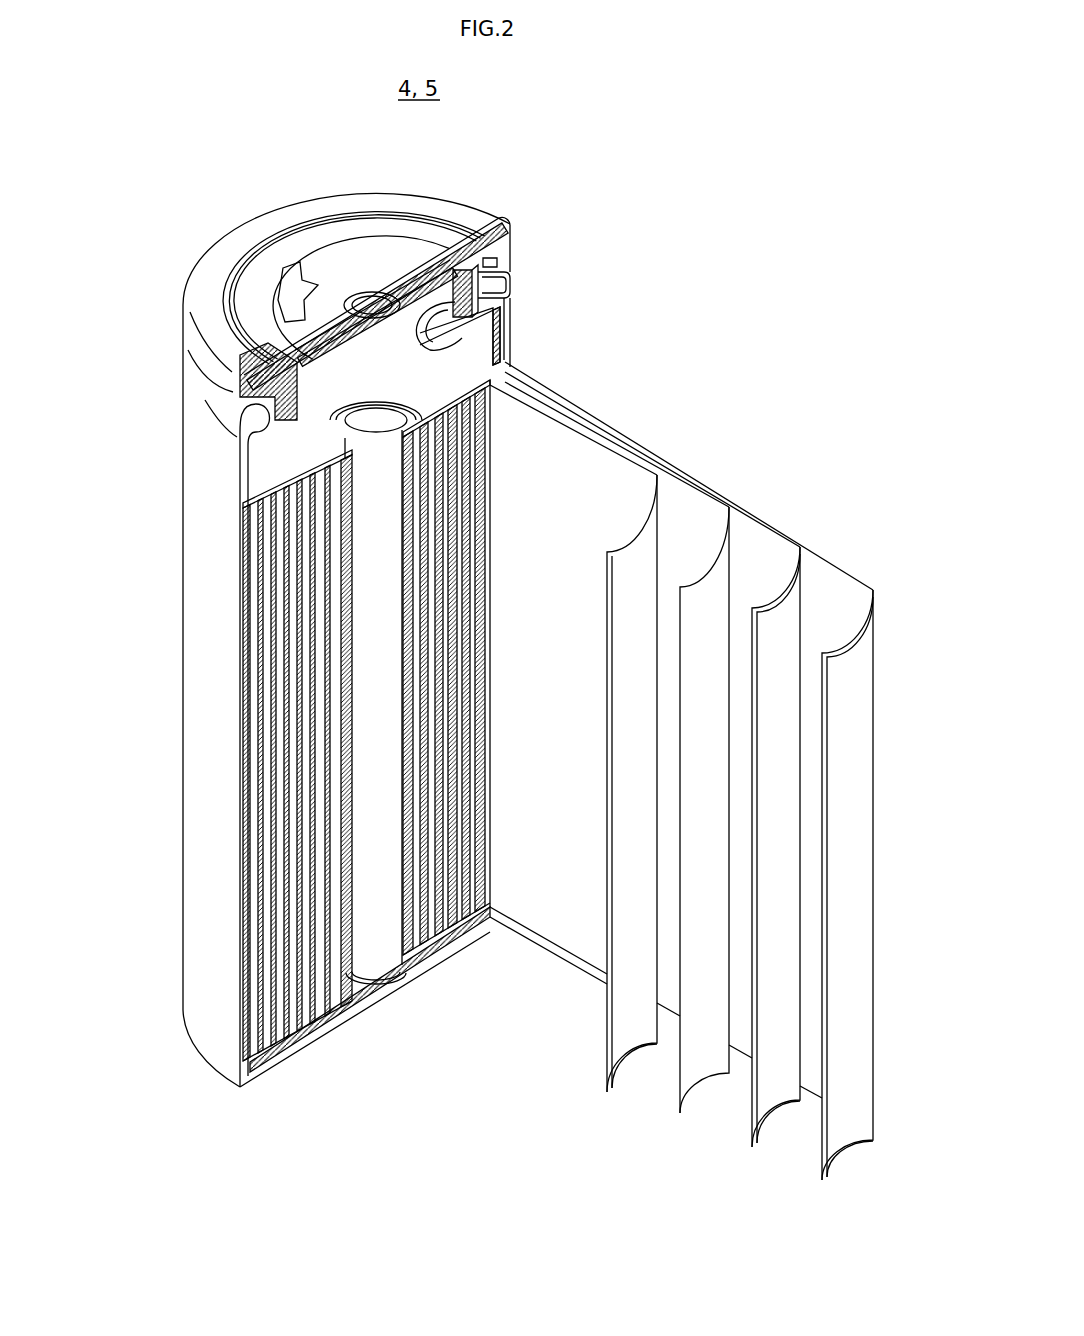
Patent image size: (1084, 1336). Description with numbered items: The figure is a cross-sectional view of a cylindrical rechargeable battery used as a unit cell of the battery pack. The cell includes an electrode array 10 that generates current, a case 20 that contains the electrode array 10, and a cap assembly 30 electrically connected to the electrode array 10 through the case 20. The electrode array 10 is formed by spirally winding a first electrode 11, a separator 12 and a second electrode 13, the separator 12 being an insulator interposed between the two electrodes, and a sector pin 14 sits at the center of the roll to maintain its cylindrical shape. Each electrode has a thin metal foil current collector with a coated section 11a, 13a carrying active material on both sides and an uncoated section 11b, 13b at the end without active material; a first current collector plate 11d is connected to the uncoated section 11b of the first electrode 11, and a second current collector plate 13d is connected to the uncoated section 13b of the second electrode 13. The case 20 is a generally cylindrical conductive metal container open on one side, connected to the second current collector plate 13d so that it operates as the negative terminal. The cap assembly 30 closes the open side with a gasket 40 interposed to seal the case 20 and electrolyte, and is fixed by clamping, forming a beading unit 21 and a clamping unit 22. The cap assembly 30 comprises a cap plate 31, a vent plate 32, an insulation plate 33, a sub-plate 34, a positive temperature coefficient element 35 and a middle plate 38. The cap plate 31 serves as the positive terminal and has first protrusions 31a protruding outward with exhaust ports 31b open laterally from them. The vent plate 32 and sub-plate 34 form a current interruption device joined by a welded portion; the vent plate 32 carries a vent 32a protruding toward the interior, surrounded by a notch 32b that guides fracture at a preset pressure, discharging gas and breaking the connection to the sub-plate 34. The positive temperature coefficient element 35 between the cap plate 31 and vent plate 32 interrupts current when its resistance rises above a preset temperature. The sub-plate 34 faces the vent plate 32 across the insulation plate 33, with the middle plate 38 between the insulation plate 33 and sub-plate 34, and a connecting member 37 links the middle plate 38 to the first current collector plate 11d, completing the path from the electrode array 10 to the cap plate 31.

The electrode array 10 is at (268, 862).
The first electrode 11 is at (803, 783).
The coated section 11a is at (795, 618).
The uncoated section 11b is at (835, 425).
The first current collector plate 11d is at (255, 482).
The separator 12 is at (700, 1097).
The second electrode 13 is at (672, 840).
The coated section 13a is at (613, 1048).
The uncoated section 13b is at (623, 1080).
The second current collector plate 13d is at (298, 1030).
The sector pin 14 is at (378, 955).
The case 20 is at (183, 628).
The beading unit 21 is at (240, 412).
The clamping unit 22 is at (230, 376).
The cap assembly 30 is at (376, 205).
The cap plate 31 is at (455, 228).
The first protrusions 31a is at (305, 245).
The exhaust ports 31b is at (280, 292).
The vent plate 32 is at (508, 250).
The vent 32a is at (369, 300).
The notch 32b is at (397, 293).
The insulation plate 33 is at (478, 278).
The sub-plate 34 is at (470, 347).
The positive temperature coefficient element 35 is at (508, 233).
The connecting member 37 is at (502, 327).
The middle plate 38 is at (473, 293).
The gasket 40 is at (495, 262).